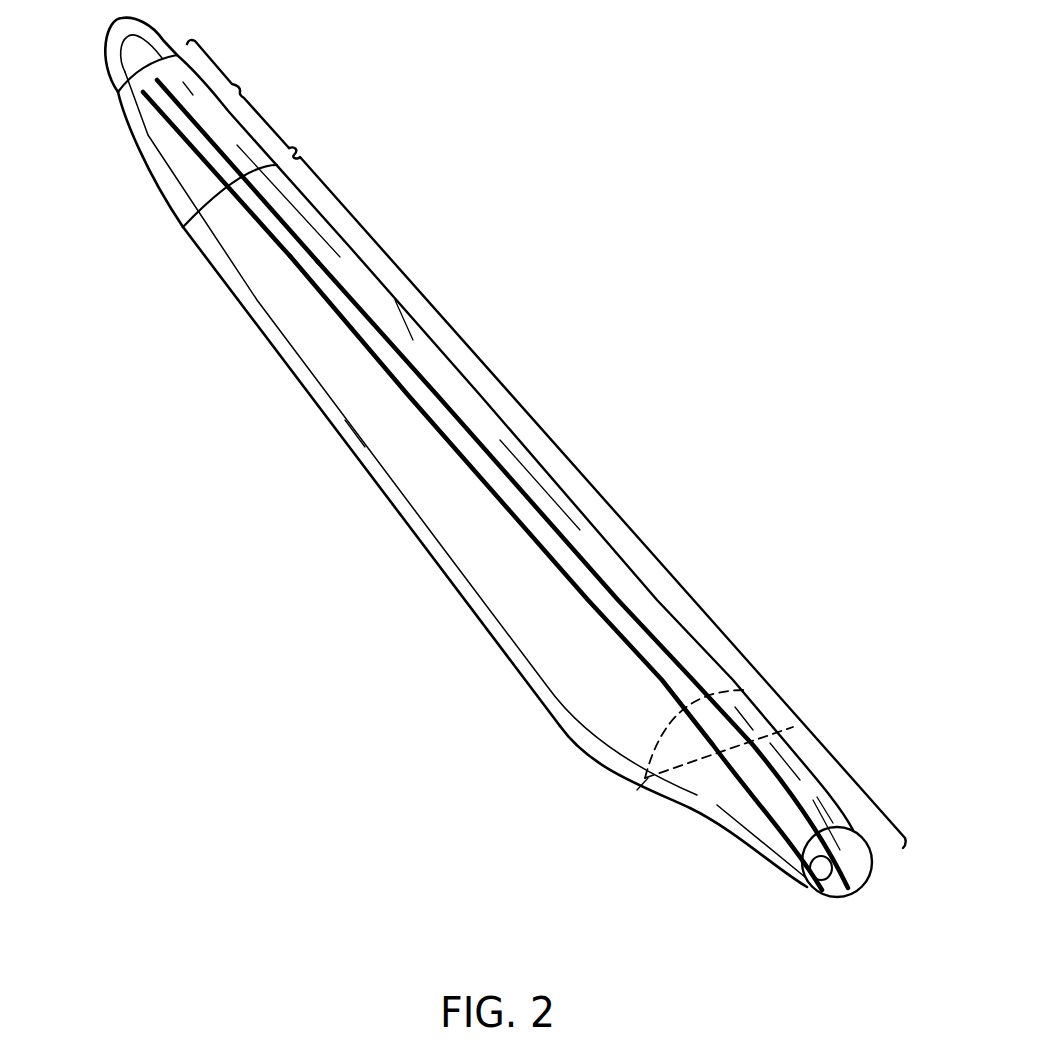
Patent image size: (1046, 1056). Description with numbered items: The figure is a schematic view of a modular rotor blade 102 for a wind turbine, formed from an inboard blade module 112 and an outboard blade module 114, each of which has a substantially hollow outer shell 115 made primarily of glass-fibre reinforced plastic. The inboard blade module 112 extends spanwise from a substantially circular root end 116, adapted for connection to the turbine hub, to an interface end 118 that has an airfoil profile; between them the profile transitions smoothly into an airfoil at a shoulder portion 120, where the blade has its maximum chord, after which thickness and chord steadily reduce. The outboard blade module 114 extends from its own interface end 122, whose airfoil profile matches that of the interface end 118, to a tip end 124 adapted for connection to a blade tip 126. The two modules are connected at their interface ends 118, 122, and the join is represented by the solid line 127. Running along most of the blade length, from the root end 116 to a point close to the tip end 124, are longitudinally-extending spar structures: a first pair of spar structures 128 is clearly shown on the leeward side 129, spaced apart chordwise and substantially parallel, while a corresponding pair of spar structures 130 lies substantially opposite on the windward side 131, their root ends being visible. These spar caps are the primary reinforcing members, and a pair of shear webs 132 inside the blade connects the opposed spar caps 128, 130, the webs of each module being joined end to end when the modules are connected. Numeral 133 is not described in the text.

The modular rotor blade 102 is at (282, 625).
The inboard blade module 112 is at (547, 435).
The outboard blade module 114 is at (238, 94).
The outer shell 115 is at (350, 449).
The root end 116 is at (770, 897).
The interface end 118 is at (185, 235).
The shoulder portion 120 is at (632, 800).
The interface end 122 is at (178, 230).
The tip end 124 is at (106, 119).
The blade tip 126 is at (158, 35).
The solid line 127 is at (217, 197).
The spar structures 128 is at (770, 808).
The leeward side 129 is at (461, 548).
The spar structures 130 is at (807, 889).
The windward side 131 is at (462, 618).
The shear webs 132 is at (839, 833).
The inner sheath edge 133 is at (505, 411).